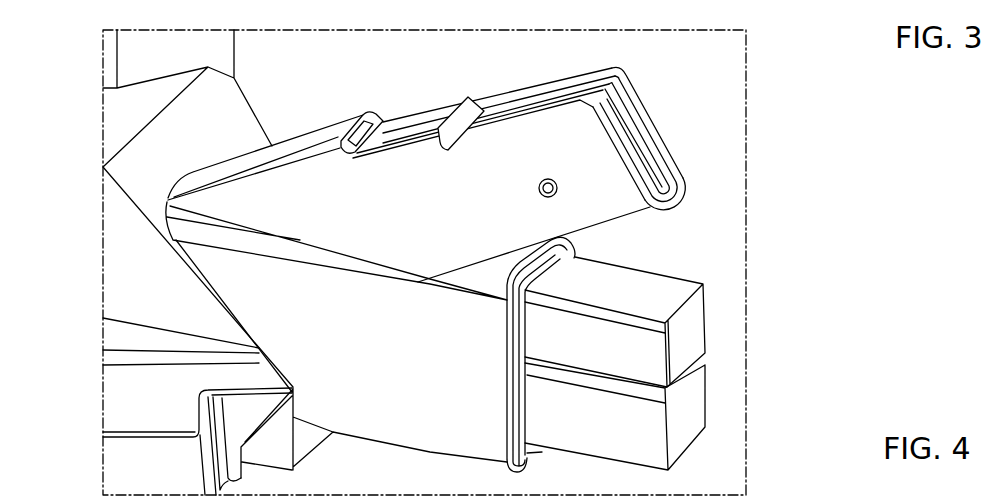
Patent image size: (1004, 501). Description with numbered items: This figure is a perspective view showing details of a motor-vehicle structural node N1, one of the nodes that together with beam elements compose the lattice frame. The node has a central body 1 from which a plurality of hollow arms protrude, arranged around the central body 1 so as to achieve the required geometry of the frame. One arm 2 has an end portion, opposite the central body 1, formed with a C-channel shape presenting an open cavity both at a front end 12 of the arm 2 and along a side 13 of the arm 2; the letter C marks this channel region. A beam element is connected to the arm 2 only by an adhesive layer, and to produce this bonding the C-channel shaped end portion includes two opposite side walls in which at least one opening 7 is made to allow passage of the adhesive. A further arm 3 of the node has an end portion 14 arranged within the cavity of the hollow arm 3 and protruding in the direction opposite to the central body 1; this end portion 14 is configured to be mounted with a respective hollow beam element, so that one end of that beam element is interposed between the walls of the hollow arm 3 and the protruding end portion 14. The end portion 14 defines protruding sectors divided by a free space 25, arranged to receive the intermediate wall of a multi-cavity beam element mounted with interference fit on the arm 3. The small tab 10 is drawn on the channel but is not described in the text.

The central body 1 is at (122, 118).
The motor-vehicle structural node N1 is at (80, 253).
The hollow arm 2 is at (298, 173).
The hollow arm 3 is at (427, 454).
The opening 7 is at (541, 200).
The tab 10 is at (472, 147).
The front end 12 is at (673, 190).
The side 13 is at (493, 120).
The end portion 14 is at (698, 268).
The free space 25 is at (673, 392).
The clip channel C is at (643, 128).